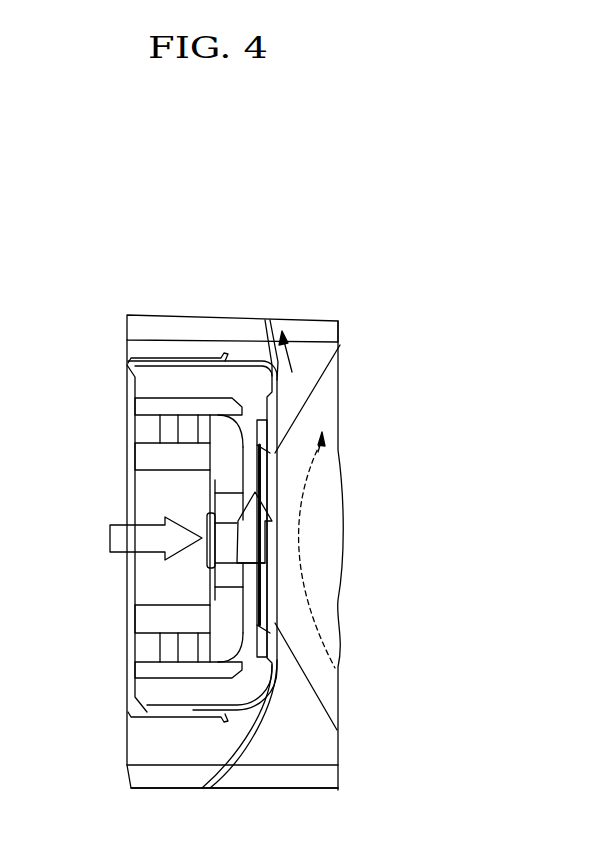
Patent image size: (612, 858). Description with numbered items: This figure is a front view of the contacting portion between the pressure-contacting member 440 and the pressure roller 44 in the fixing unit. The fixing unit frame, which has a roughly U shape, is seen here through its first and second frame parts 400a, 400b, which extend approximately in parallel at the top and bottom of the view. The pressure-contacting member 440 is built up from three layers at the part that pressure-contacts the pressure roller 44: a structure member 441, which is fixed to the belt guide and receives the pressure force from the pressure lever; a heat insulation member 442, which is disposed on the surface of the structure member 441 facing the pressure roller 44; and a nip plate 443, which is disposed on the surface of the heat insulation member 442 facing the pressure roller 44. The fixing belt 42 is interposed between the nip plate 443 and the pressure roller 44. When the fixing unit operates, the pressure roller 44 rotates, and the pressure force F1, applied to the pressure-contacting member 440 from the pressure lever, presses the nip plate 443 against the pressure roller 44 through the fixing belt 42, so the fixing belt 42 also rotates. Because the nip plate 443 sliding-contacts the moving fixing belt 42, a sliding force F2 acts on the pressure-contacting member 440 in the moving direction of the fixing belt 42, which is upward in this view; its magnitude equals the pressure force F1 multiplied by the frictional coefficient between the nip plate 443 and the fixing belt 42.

The first frame part 400a is at (318, 328).
The second frame part 400b is at (317, 780).
The fixing belt 42 is at (263, 728).
The pressure roller 44 is at (318, 683).
The pressure-contacting member 440 is at (180, 720).
The structure member 441 is at (213, 430).
The heat insulation member 442 is at (214, 385).
The nip plate 443 is at (270, 415).
The pressure force F1 is at (125, 533).
The sliding force F2 is at (258, 548).